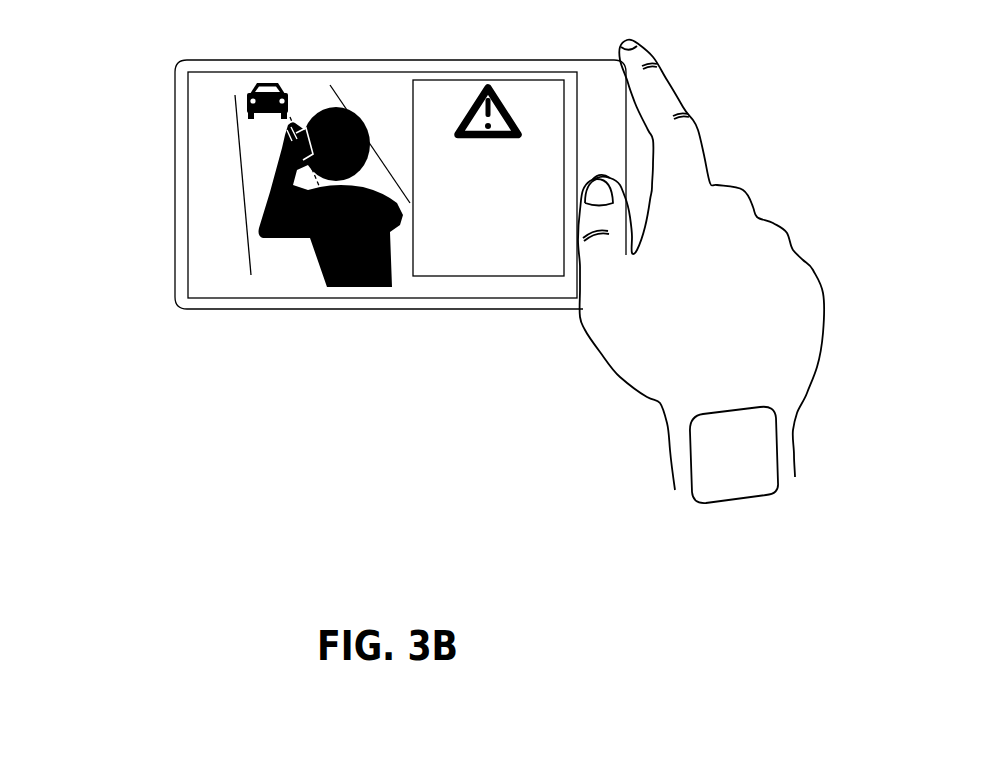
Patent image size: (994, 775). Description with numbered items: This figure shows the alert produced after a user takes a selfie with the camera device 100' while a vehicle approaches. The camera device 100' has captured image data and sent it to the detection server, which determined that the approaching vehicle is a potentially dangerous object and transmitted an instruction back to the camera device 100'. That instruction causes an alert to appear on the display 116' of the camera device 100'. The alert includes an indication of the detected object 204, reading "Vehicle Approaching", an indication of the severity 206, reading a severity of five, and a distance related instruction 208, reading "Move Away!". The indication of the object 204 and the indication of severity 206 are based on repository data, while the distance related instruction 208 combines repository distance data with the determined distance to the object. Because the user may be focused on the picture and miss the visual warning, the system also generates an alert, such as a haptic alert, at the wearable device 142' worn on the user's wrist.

The camera device 100' is at (334, 184).
The display 116' is at (335, 185).
The indication of the detected object 204 is at (552, 150).
The distance related instruction 208 is at (550, 197).
The indication of the severity 206 is at (480, 247).
The wearable device 142' is at (677, 455).